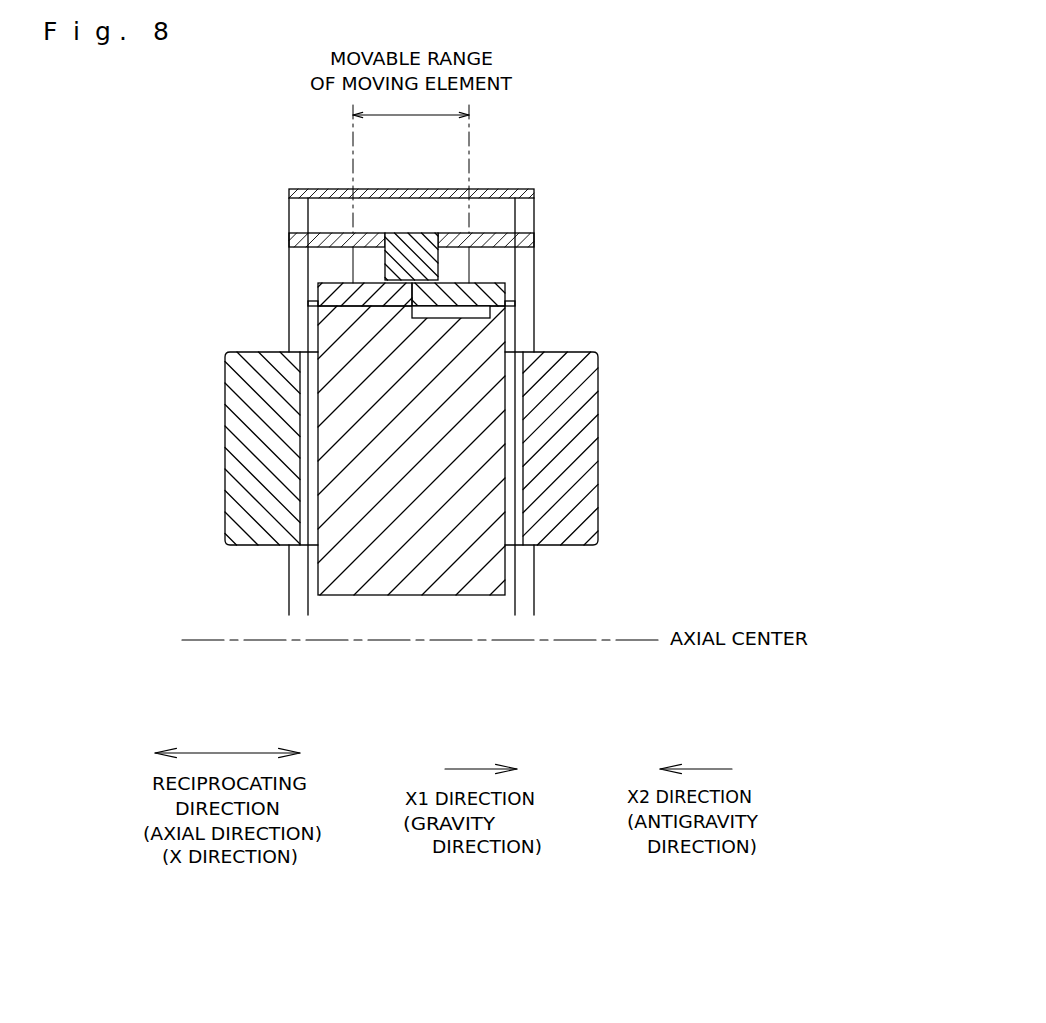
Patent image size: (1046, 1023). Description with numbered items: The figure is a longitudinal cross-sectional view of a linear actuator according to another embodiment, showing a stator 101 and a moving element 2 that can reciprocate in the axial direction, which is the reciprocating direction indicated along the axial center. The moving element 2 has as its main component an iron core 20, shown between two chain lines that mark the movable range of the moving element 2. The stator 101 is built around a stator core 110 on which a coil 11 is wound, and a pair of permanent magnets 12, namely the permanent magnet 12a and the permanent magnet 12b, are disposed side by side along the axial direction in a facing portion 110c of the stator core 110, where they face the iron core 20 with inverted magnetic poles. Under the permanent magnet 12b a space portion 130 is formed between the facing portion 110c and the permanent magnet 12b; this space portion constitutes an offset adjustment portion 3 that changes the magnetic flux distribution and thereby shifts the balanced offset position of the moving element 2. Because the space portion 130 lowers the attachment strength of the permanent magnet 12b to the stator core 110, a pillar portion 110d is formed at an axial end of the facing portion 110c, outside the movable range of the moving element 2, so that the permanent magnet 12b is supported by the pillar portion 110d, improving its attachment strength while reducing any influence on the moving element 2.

The moving element 2 is at (543, 177).
The offset adjustment portion 3 is at (441, 423).
The coil 11 is at (240, 404).
The permanent magnets 12 is at (414, 278).
The permanent magnet 12a is at (323, 293).
The permanent magnet 12b is at (498, 288).
The iron core 20 is at (413, 237).
The stator 101 is at (438, 448).
The stator core 110 is at (386, 439).
The facing portion 110c is at (312, 306).
The pillar portion 110d is at (490, 312).
The space portion 130 is at (472, 313).